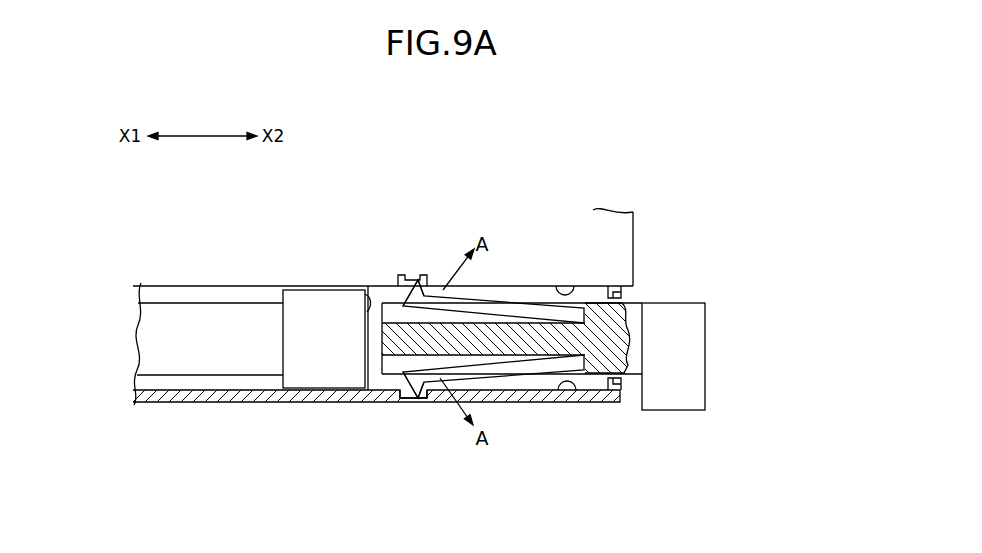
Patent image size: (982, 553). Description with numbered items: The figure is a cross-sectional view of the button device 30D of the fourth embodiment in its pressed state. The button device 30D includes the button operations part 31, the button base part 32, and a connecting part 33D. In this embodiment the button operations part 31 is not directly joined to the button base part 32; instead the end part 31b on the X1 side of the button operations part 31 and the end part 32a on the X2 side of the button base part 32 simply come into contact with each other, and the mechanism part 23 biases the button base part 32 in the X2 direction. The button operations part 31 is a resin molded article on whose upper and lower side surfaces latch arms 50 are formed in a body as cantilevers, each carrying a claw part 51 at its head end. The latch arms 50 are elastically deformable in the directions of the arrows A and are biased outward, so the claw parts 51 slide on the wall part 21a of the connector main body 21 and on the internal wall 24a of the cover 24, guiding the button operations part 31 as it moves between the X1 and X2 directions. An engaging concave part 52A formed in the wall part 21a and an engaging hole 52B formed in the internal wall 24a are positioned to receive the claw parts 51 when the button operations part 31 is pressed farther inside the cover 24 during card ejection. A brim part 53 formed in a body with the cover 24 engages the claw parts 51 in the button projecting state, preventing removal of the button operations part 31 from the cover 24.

The button device 30D is at (180, 90).
The mechanism part 23 is at (206, 320).
The button base part 32 is at (314, 372).
The end part 32a is at (365, 293).
The connecting part 33D is at (375, 283).
The end part 31b is at (375, 362).
The latch arms 50 is at (485, 300).
The claw parts 51 is at (419, 280).
The engaging concave part 52A is at (405, 275).
The engaging hole 52B is at (407, 403).
The cover 24 is at (204, 404).
The internal wall 24a is at (573, 392).
The connector main body 21 is at (608, 235).
The wall part 21a is at (567, 291).
The brim part 53 is at (624, 293).
The button operations part 31 is at (720, 313).